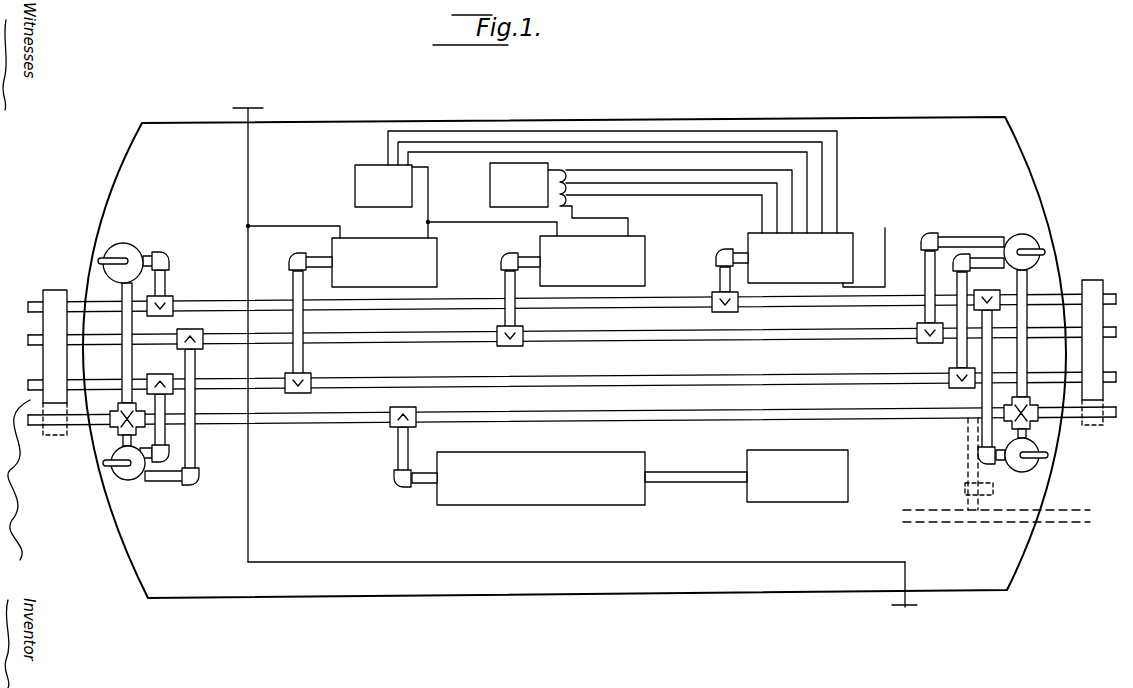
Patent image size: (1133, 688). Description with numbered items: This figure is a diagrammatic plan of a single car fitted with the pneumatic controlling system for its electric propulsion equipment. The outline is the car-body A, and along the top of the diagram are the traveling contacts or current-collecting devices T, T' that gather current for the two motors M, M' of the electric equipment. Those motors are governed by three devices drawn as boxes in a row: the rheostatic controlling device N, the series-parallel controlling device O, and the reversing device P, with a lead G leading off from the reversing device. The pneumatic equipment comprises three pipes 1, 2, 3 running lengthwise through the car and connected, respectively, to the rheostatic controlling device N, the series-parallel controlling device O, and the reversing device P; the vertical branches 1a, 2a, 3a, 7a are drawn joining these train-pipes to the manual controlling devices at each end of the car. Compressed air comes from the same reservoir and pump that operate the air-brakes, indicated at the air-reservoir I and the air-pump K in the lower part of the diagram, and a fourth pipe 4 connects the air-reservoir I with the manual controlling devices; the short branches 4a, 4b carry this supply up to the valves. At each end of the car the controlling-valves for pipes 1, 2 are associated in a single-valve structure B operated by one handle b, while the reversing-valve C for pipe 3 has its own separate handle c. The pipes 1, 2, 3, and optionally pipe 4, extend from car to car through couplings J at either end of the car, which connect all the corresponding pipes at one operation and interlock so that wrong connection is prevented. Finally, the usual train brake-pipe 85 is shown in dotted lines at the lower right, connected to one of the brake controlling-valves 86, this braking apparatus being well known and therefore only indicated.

The car-body A is at (574, 357).
The traveling contact T is at (569, 330).
The tank wall line T' is at (913, 590).
The motor M is at (596, 184).
The motor coil M' is at (641, 199).
The rheostatic controlling device N is at (384, 262).
The series-parallel controlling device O is at (592, 261).
The reversing device P is at (800, 258).
The generator lead G is at (867, 247).
The air-reservoir I is at (592, 478).
The air-pump K is at (797, 476).
The pipe 1 is at (370, 381).
The pipe 2 is at (375, 344).
The pipe 3 is at (267, 301).
The fourth pipe 4 is at (301, 421).
The coupling J is at (572, 345).
The branch pipe 1a is at (163, 432).
The branch pipe 2a is at (196, 371).
The branch pipe 3a is at (166, 268).
The branch pipe 4a is at (118, 437).
The branch pipe 4b is at (122, 300).
The tee fitting 7a is at (965, 275).
The single-valve structure B is at (1051, 211).
The handle b is at (112, 461).
The reversing-valve C is at (1019, 471).
The handle c is at (105, 257).
The train brake-pipe 85 is at (922, 519).
The controlling-valve 86 is at (966, 490).